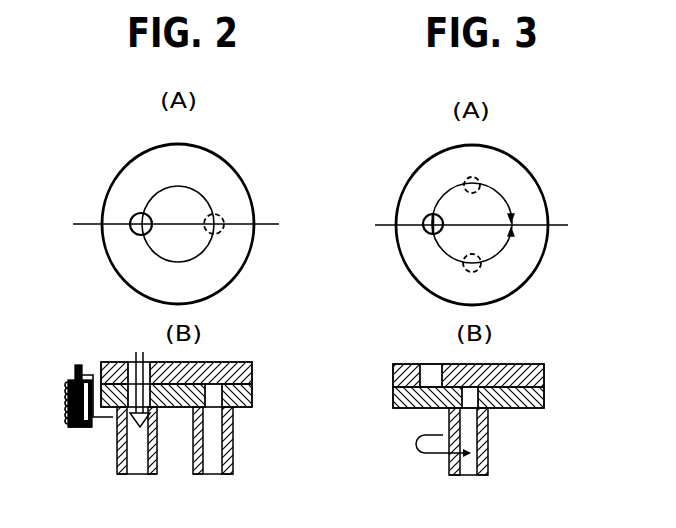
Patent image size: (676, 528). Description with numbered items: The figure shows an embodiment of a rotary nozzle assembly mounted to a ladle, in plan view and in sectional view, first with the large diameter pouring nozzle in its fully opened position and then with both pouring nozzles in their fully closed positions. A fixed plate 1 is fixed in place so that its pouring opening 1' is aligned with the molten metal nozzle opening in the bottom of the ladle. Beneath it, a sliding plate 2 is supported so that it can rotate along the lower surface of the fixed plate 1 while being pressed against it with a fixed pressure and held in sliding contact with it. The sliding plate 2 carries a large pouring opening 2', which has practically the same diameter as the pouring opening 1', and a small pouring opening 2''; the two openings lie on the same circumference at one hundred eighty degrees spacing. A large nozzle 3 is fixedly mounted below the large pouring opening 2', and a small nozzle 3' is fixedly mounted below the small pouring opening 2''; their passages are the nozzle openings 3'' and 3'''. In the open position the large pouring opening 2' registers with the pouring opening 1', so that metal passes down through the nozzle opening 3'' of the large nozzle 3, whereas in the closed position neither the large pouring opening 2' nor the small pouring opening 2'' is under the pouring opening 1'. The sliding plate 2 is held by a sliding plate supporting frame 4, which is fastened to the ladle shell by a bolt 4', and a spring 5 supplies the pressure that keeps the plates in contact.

In FIG. 2, the fixed plate 1 is at (182, 275).
In FIG. 3, the fixed plate 1 is at (477, 276).
In FIG. 2, the pouring opening 1' is at (109, 295).
In FIG. 3, the pouring opening 1' is at (409, 275).
In FIG. 2, the sliding plate 2 is at (224, 399).
In FIG. 3, the sliding plate 2 is at (485, 389).
In FIG. 2, the large pouring opening 2' is at (184, 285).
In FIG. 3, the large pouring opening 2' is at (506, 288).
In FIG. 2, the small pouring opening 2'' is at (229, 384).
In FIG. 3, the small pouring opening 2'' is at (482, 309).
In FIG. 2, the large nozzle 3 is at (149, 454).
In FIG. 2, the small nozzle 3' is at (244, 452).
In FIG. 3, the small nozzle 3' is at (496, 450).
In FIG. 2, the nozzle opening 3'' is at (158, 441).
In FIG. 2, the nozzle opening 3''' is at (255, 441).
In FIG. 3, the nozzle opening 3''' is at (506, 441).
In FIG. 2, the sliding plate supporting frame 4 is at (73, 373).
In FIG. 2, the bolt 4' is at (65, 443).
In FIG. 2, the spring 5 is at (68, 400).